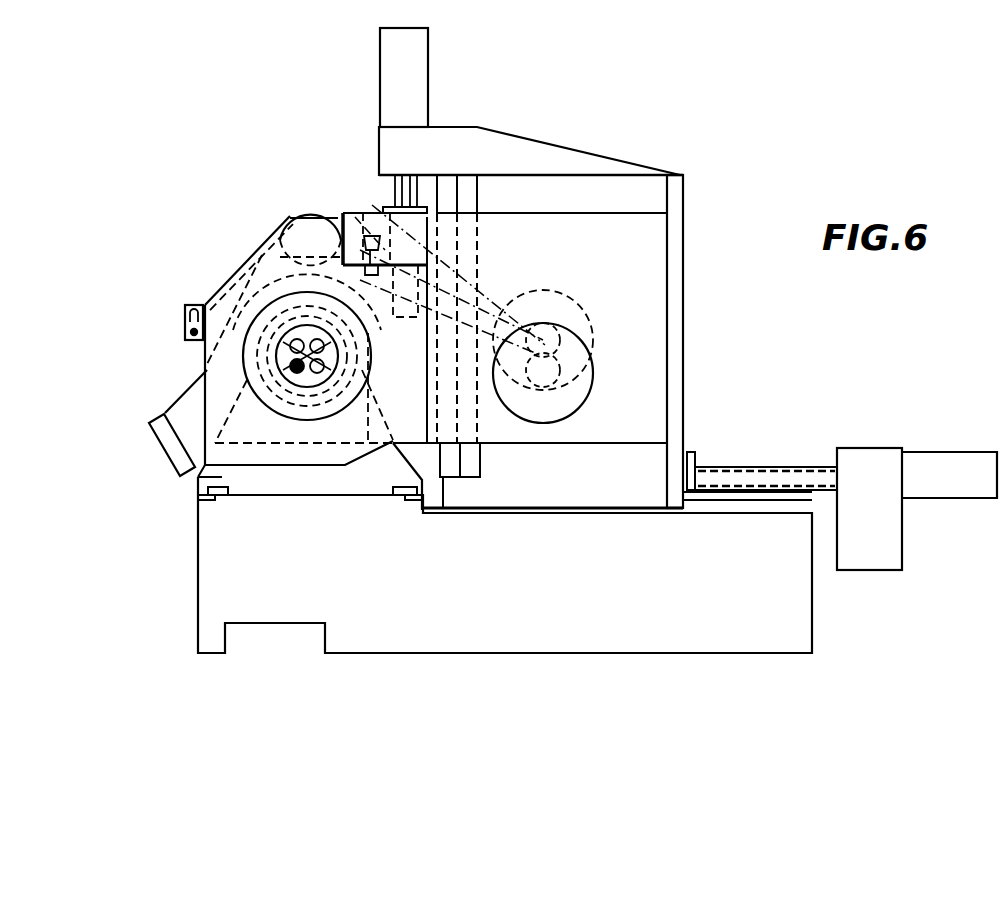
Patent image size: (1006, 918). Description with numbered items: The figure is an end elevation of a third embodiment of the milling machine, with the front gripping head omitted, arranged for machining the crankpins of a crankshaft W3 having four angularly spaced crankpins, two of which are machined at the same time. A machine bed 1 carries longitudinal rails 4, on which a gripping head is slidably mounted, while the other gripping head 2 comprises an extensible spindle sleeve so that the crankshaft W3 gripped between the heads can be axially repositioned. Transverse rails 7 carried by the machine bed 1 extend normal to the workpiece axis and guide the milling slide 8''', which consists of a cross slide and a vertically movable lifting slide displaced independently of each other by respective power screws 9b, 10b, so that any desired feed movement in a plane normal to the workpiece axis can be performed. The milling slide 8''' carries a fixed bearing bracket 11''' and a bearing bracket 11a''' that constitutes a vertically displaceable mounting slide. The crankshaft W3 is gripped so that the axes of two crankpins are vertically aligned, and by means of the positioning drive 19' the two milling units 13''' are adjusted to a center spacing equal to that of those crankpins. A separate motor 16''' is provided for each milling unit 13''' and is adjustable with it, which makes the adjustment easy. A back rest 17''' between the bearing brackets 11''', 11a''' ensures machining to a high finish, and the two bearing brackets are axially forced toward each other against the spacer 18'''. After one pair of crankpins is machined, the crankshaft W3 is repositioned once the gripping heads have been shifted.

The machine bed 1 is at (780, 610).
The gripping head 2 is at (222, 473).
The longitudinal rails 4 is at (200, 497).
The transverse rails 7 is at (765, 497).
The milling slide 8''' is at (540, 287).
The power screw 9b is at (950, 468).
The power screw 10b is at (410, 76).
The fixed bearing bracket 11''' is at (313, 319).
The bearing bracket 11a''' is at (212, 248).
The milling units 13''' is at (307, 409).
The motor 16''' is at (642, 356).
The back rest 17''' is at (141, 423).
The spacer 18''' is at (149, 325).
The positioning drive 19' is at (363, 209).
The crankshaft W3 is at (303, 353).